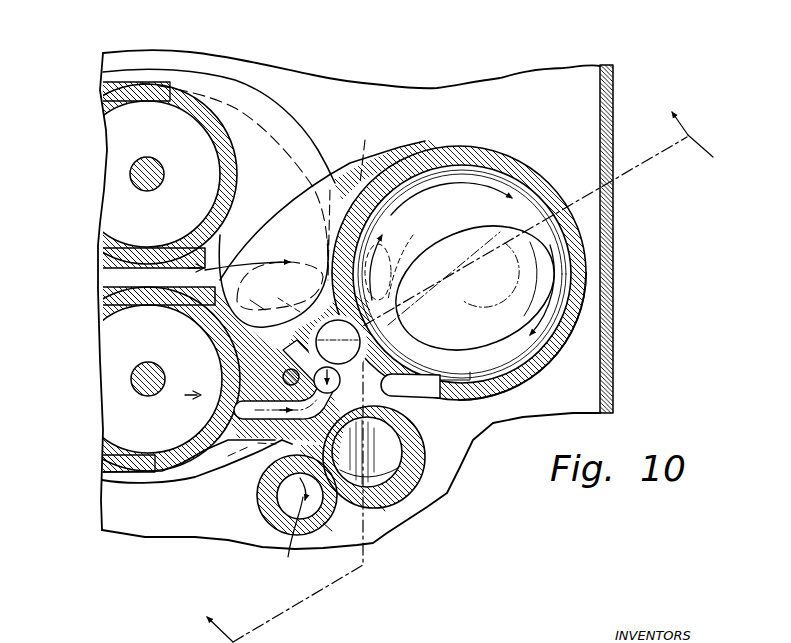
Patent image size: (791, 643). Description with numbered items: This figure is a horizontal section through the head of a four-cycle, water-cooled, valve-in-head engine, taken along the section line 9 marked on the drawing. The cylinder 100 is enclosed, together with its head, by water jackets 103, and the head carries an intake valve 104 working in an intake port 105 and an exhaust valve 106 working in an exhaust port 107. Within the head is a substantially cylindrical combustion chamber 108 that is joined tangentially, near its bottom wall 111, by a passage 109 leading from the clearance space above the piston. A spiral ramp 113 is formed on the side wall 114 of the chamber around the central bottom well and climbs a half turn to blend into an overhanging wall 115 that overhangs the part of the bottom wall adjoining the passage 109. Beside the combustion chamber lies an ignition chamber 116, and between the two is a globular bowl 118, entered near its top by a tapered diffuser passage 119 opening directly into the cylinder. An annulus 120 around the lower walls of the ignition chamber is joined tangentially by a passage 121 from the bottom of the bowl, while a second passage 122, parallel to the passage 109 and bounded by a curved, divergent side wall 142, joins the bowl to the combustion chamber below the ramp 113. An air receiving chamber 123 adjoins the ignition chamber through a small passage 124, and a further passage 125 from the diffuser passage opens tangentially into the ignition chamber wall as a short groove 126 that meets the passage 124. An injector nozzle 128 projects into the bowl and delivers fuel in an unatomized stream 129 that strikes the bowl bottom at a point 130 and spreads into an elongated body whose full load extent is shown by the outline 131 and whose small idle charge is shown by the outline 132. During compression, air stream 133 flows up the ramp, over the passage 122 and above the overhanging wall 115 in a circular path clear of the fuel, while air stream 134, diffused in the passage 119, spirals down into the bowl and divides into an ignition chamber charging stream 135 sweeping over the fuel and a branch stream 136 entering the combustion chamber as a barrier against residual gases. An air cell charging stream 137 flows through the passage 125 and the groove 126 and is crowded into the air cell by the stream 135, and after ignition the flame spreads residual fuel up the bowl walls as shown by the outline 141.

The section line 9- 9 is at (460, 377).
The cylinder 100 is at (300, 142).
The water jackets 103 is at (492, 423).
The intake valve 104 is at (210, 168).
The intake port 105 is at (125, 262).
The exhaust valve 106 is at (130, 345).
The exhaust port 107 is at (127, 302).
The combustion chamber 108 is at (512, 215).
The passage 109 is at (361, 205).
The bottom wall 111 is at (475, 288).
The spiral ramp 113 is at (513, 380).
The side wall 114 is at (455, 373).
The overhanging wall 115 is at (445, 244).
The ignition chamber 116 is at (422, 447).
The globular bowl 118 is at (264, 301).
The passage 119 is at (246, 445).
The annulus 120 is at (398, 515).
The passage 121 is at (373, 452).
The second passage 122 is at (380, 272).
The air receiving chamber 123 is at (280, 510).
The small passage 124 is at (341, 534).
The second passage 125 is at (262, 445).
The groove 126 is at (301, 489).
The nozzle 128 is at (285, 368).
The unatomized stream 129 is at (303, 340).
The point 130 is at (295, 296).
The full load fuel outline 131 is at (470, 298).
The idle charge outline 132 is at (402, 396).
The air stream 133 is at (490, 195).
The air stream 134 is at (215, 400).
The ignition chamber charging stream 135 is at (410, 470).
The branch stream 136 is at (365, 350).
The air cell charging stream 137 is at (289, 536).
The outline 141 is at (266, 281).
The side wall 142 is at (416, 264).